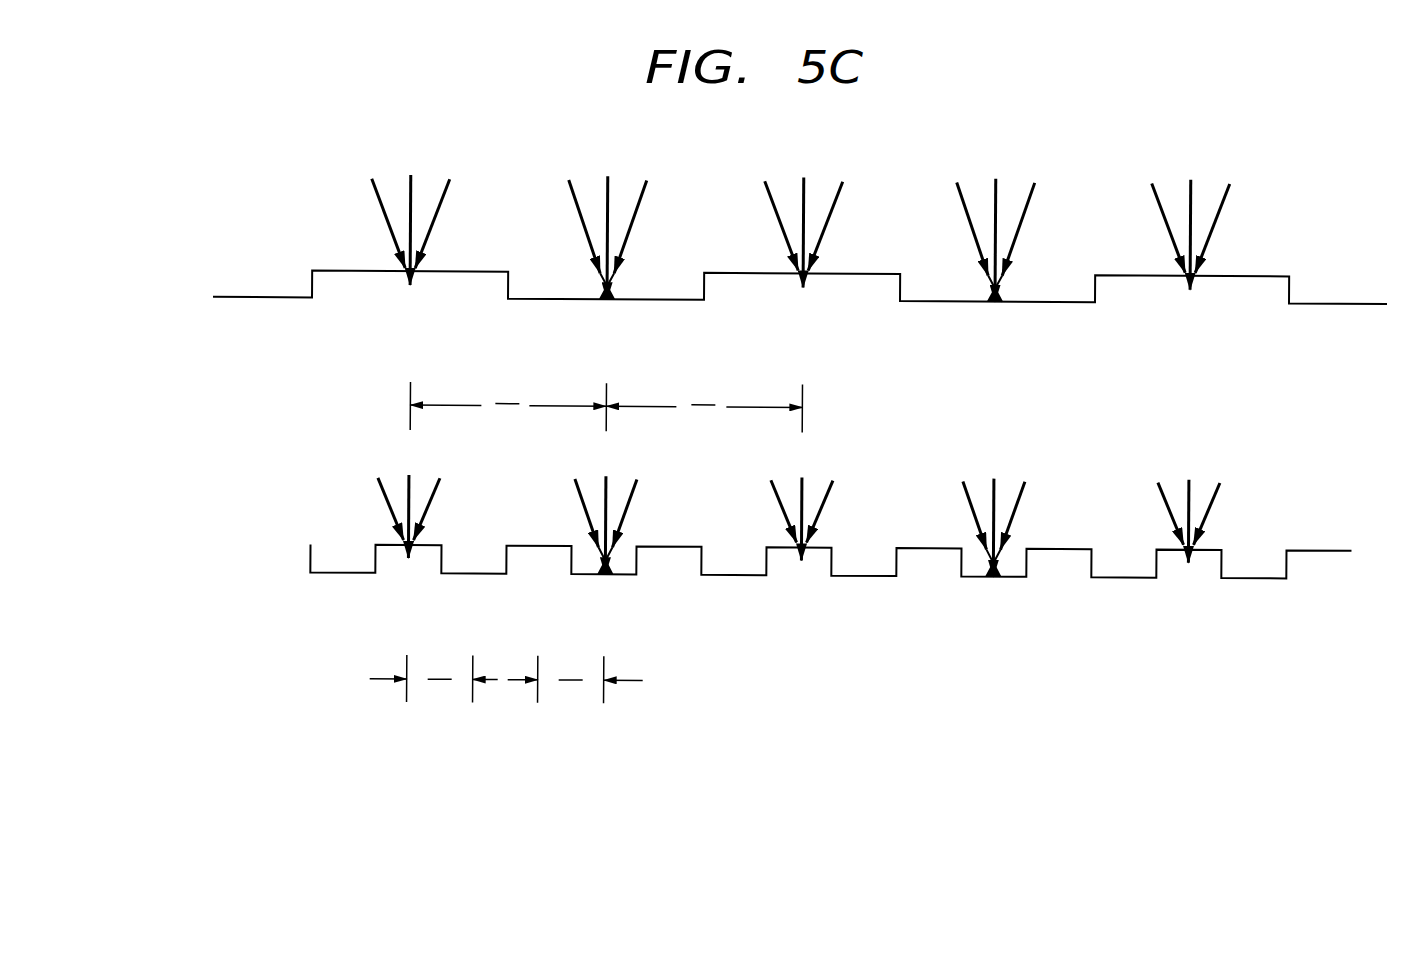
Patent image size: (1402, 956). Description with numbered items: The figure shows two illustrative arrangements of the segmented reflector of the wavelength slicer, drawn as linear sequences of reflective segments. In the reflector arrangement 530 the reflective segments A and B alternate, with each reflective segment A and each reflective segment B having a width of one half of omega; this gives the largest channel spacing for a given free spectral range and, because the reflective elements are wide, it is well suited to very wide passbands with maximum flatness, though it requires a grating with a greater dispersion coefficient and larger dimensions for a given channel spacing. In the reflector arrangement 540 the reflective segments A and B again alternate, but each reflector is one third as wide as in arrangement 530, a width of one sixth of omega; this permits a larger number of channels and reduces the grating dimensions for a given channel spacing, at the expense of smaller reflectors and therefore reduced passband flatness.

The reflector arrangement 530 is at (749, 340).
The reflector arrangement 540 is at (730, 613).
The reflective segment A is at (849, 400).
The reflective segment B is at (800, 400).